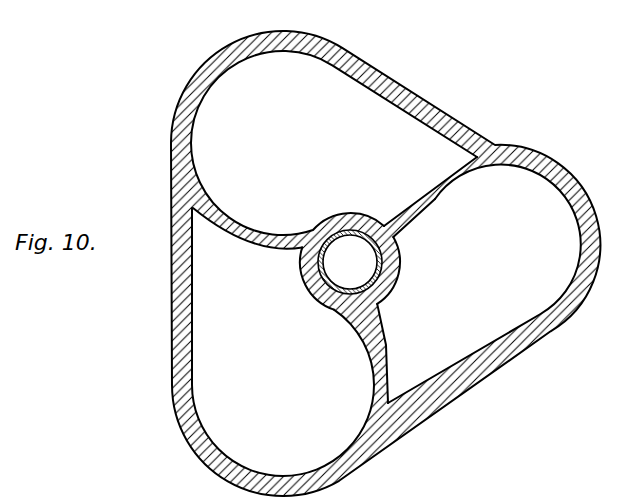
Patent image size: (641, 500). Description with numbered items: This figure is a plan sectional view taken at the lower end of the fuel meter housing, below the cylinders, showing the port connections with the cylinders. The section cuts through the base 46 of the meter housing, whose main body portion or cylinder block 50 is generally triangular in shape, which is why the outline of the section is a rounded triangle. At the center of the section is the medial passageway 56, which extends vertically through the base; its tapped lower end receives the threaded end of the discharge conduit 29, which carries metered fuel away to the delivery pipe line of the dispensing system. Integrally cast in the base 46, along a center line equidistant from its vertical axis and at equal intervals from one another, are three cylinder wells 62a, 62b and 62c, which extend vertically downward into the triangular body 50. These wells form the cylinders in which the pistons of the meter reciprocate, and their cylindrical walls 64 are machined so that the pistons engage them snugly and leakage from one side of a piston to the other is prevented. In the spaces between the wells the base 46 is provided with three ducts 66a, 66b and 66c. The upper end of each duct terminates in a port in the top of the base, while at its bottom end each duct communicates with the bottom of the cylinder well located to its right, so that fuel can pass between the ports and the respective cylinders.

The base 46 is at (498, 139).
The main body portion or cylinder block 50 is at (172, 396).
The cylindrical walls 64 is at (201, 183).
The cylinder well 62a is at (561, 322).
The cylinder well 62b is at (373, 397).
The cylinder well 62c is at (210, 82).
The duct 66a is at (390, 344).
The duct 66b is at (226, 242).
The duct 66c is at (420, 181).
The discharge conduit 29 is at (312, 304).
The medial passageway 56 is at (363, 261).